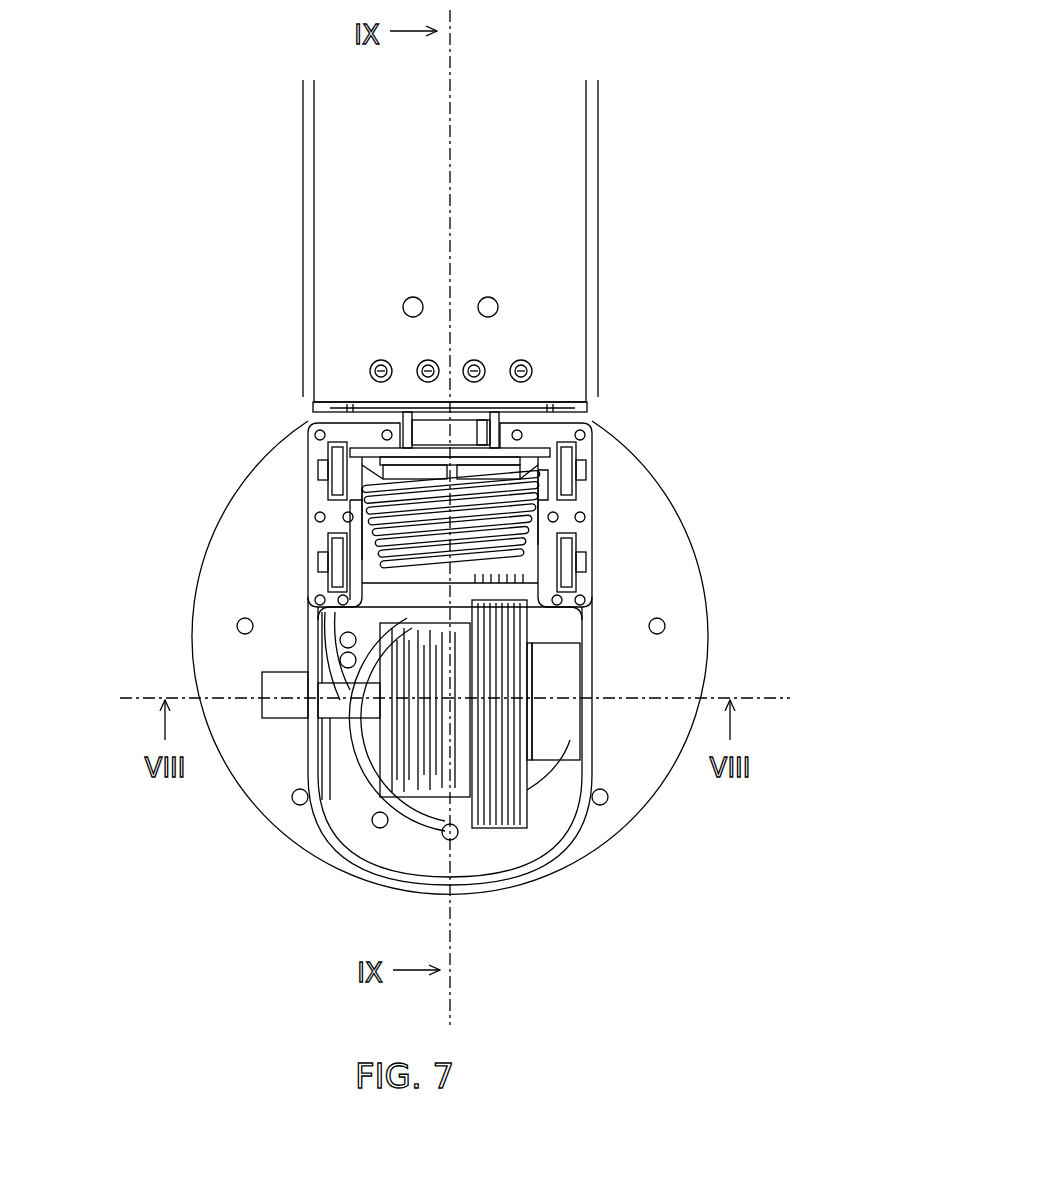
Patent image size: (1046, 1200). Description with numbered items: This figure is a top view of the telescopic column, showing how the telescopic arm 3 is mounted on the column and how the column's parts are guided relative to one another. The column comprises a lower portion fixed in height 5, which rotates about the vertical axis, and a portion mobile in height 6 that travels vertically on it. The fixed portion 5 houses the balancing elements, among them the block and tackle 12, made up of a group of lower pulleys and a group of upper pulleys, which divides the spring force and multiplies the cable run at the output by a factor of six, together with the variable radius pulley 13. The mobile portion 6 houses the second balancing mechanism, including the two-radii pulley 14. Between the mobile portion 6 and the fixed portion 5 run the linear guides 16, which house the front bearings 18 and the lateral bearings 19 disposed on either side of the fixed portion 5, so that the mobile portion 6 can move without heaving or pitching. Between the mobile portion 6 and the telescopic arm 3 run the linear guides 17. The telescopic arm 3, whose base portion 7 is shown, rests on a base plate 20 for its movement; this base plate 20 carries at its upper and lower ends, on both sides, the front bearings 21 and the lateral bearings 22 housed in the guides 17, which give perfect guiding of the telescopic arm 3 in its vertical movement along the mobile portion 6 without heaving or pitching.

The telescopic arm 3 is at (508, 73).
The lower portion fixed in height 5 is at (587, 780).
The portion mobile in height 6 is at (310, 447).
The base portion 7 is at (548, 202).
The block and tackle 12 is at (400, 655).
The variable radius pulley 13 is at (500, 717).
The two-radii pulley 14 is at (360, 514).
The linear guides 16 is at (310, 580).
The linear guides 17 is at (318, 488).
The front bearings 18 is at (567, 547).
The lateral bearings 19 is at (577, 558).
The base plate 20 is at (398, 455).
The front bearings 21 is at (563, 450).
The lateral bearings 22 is at (575, 462).